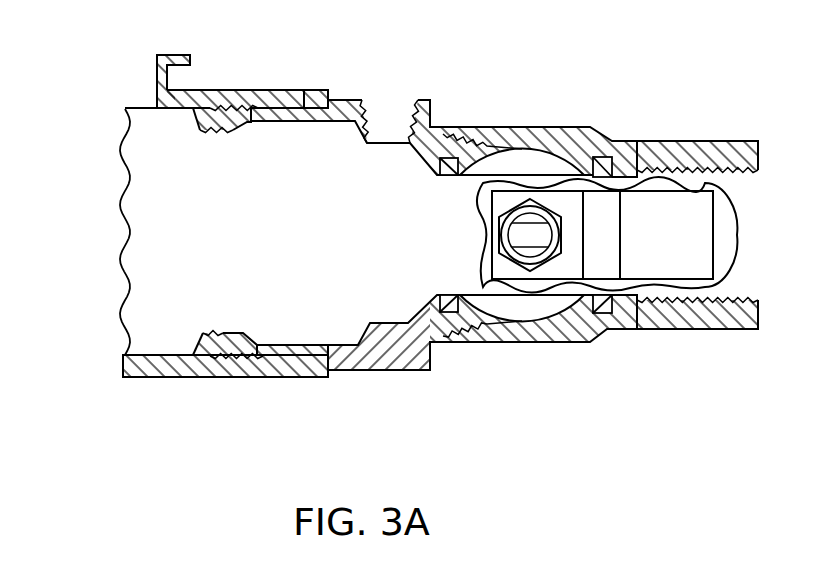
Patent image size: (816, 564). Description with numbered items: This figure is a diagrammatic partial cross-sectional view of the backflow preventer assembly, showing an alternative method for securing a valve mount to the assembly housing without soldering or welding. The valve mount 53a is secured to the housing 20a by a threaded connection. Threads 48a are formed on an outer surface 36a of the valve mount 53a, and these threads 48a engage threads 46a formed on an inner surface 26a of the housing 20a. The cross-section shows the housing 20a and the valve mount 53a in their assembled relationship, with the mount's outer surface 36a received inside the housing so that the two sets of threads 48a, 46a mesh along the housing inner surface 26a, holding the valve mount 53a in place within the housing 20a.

The housing 20a is at (167, 366).
The inner surface of housing 26a is at (177, 133).
The outer surface of the mount 36a is at (310, 92).
The threads on inner surface of housing 46a is at (210, 92).
The threads on outer surface of mount 48a is at (262, 92).
The valve mount 53a is at (348, 122).